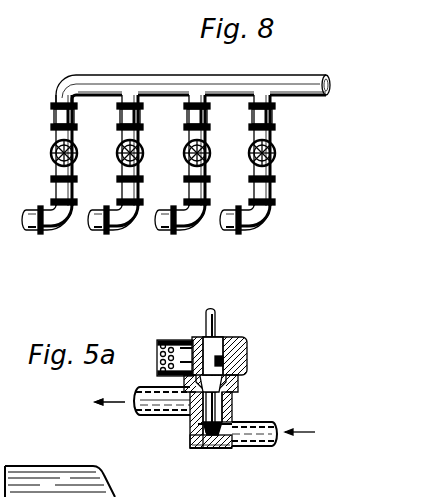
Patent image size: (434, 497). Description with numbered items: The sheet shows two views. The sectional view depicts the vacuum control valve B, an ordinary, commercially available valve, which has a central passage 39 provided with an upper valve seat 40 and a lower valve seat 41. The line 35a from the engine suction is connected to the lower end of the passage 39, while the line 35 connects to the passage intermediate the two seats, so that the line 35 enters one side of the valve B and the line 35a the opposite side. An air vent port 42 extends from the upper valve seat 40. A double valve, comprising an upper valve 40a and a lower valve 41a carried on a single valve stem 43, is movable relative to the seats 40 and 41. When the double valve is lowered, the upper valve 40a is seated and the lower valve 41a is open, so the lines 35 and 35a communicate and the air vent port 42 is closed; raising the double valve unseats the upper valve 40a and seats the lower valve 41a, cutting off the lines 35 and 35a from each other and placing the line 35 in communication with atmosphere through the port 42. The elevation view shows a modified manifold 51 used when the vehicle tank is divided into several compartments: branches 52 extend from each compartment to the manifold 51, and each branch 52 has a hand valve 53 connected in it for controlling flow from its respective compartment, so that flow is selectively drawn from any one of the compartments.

In FIG. 8, the manifold 51 is at (151, 78).
In FIG. 8, the branches 52 is at (143, 117).
In FIG. 8, the hand valve 53 is at (79, 153).
In FIG. 5A, the line 35 is at (154, 416).
In FIG. 5A, the line from the engine suction 35a is at (270, 447).
In FIG. 5A, the central passage 39 is at (238, 404).
In FIG. 5A, the upper valve seat 40 is at (240, 386).
In FIG. 5A, the upper valve 40a is at (248, 365).
In FIG. 5A, the lower valve seat 41 is at (238, 420).
In FIG. 5A, the lower valve 41a is at (200, 450).
In FIG. 5A, the air vent port 42 is at (200, 356).
In FIG. 5A, the valve stem 43 is at (216, 325).
In FIG. 5A, the vacuum control valve B is at (228, 450).